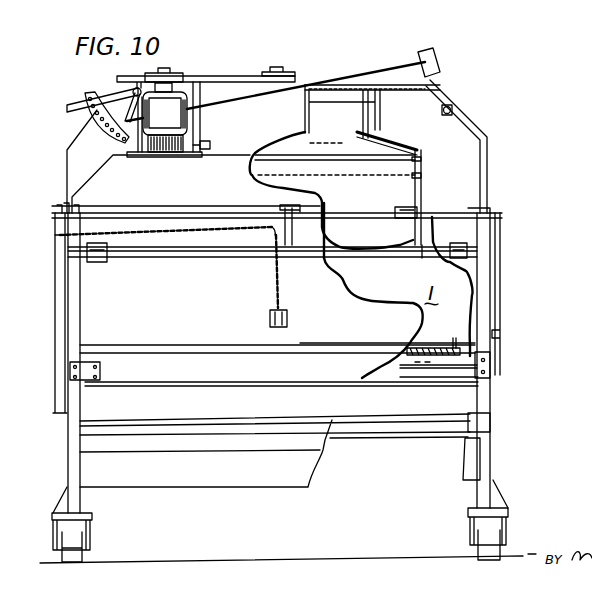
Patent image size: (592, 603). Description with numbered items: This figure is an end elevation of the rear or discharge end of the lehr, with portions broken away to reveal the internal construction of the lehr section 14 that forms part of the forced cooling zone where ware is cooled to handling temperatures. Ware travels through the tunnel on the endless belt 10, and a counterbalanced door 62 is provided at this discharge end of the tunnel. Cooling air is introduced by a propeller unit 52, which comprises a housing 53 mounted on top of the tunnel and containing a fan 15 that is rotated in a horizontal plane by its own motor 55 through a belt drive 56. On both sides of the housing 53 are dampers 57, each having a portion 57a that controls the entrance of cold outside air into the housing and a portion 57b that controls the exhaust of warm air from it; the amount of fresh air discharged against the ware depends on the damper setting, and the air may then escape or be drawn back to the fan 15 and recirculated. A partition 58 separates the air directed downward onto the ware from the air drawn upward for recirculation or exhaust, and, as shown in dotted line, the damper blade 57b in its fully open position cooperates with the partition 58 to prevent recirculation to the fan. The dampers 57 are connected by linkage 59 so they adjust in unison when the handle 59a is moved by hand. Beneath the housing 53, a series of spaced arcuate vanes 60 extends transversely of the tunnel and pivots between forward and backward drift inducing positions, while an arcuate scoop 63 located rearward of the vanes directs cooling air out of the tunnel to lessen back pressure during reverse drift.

The endless belt 10 is at (427, 347).
The lehr section 14 is at (513, 296).
The fan 15 is at (317, 143).
The propeller unit 52 is at (300, 64).
The housing 53 is at (67, 165).
The motor 55 is at (163, 112).
The belt drive 56 is at (217, 78).
The damper 57 is at (458, 110).
The damper portion 57a is at (410, 80).
The damper blade 57b is at (422, 174).
The partition 58 is at (410, 194).
The linkage 59 is at (332, 80).
The handle 59a is at (72, 107).
The arcuate vane 60 is at (368, 234).
The counterbalanced door 62 is at (95, 308).
The arcuate scoop 63 is at (353, 258).